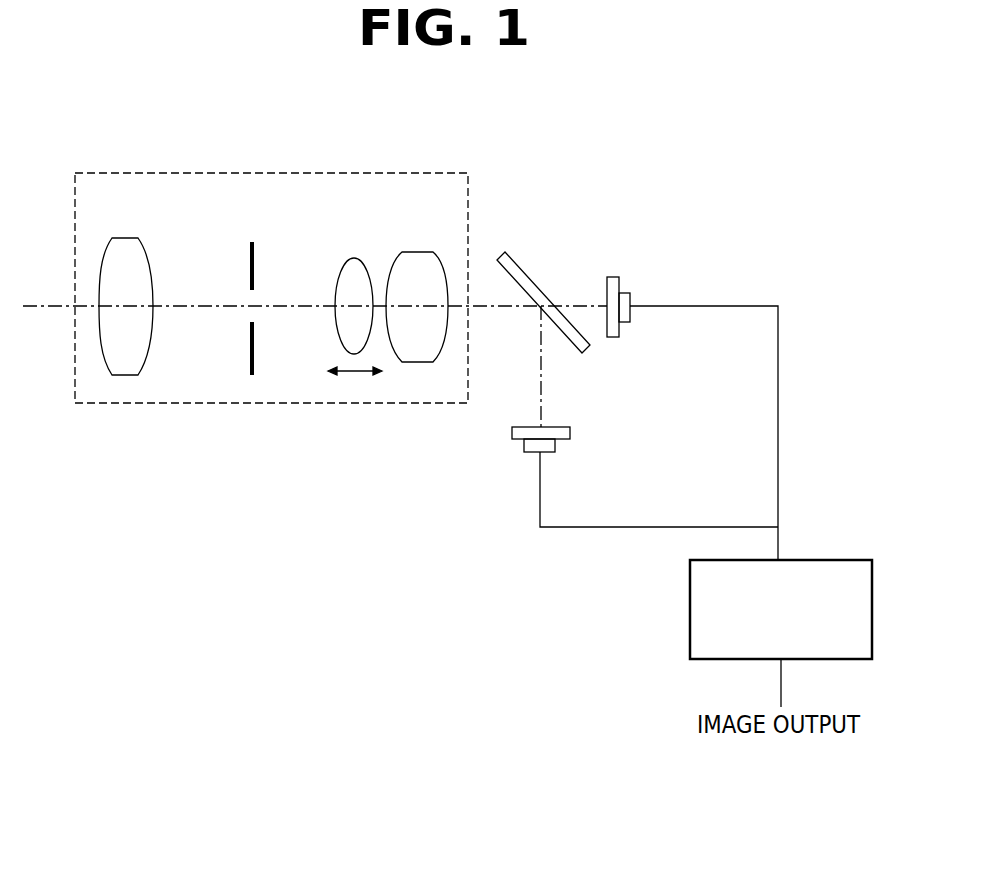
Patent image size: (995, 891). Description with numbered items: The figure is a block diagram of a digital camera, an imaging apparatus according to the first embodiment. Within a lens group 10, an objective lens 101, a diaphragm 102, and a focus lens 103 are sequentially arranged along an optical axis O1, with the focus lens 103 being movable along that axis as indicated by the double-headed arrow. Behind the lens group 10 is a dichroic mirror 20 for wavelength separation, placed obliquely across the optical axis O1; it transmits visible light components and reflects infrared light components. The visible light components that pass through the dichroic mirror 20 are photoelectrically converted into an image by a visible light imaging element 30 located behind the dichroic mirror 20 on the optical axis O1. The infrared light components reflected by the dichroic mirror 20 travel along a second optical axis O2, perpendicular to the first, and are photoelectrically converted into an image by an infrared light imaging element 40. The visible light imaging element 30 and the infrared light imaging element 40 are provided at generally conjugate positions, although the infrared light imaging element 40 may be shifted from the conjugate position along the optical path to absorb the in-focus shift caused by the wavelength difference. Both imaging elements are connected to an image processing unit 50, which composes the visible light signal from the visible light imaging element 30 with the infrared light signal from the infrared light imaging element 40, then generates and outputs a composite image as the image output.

The lens group 10 is at (180, 172).
The objective lens 101 is at (125, 238).
The diaphragm 102 is at (252, 242).
The focus lens 103 is at (354, 258).
The optical axis O1 is at (212, 305).
The dichroic mirror 20 is at (509, 258).
The visible light imaging element 30 is at (612, 277).
The optical axis O2 is at (545, 385).
The infrared light imaging element 40 is at (572, 433).
The image processing unit 50 is at (690, 597).